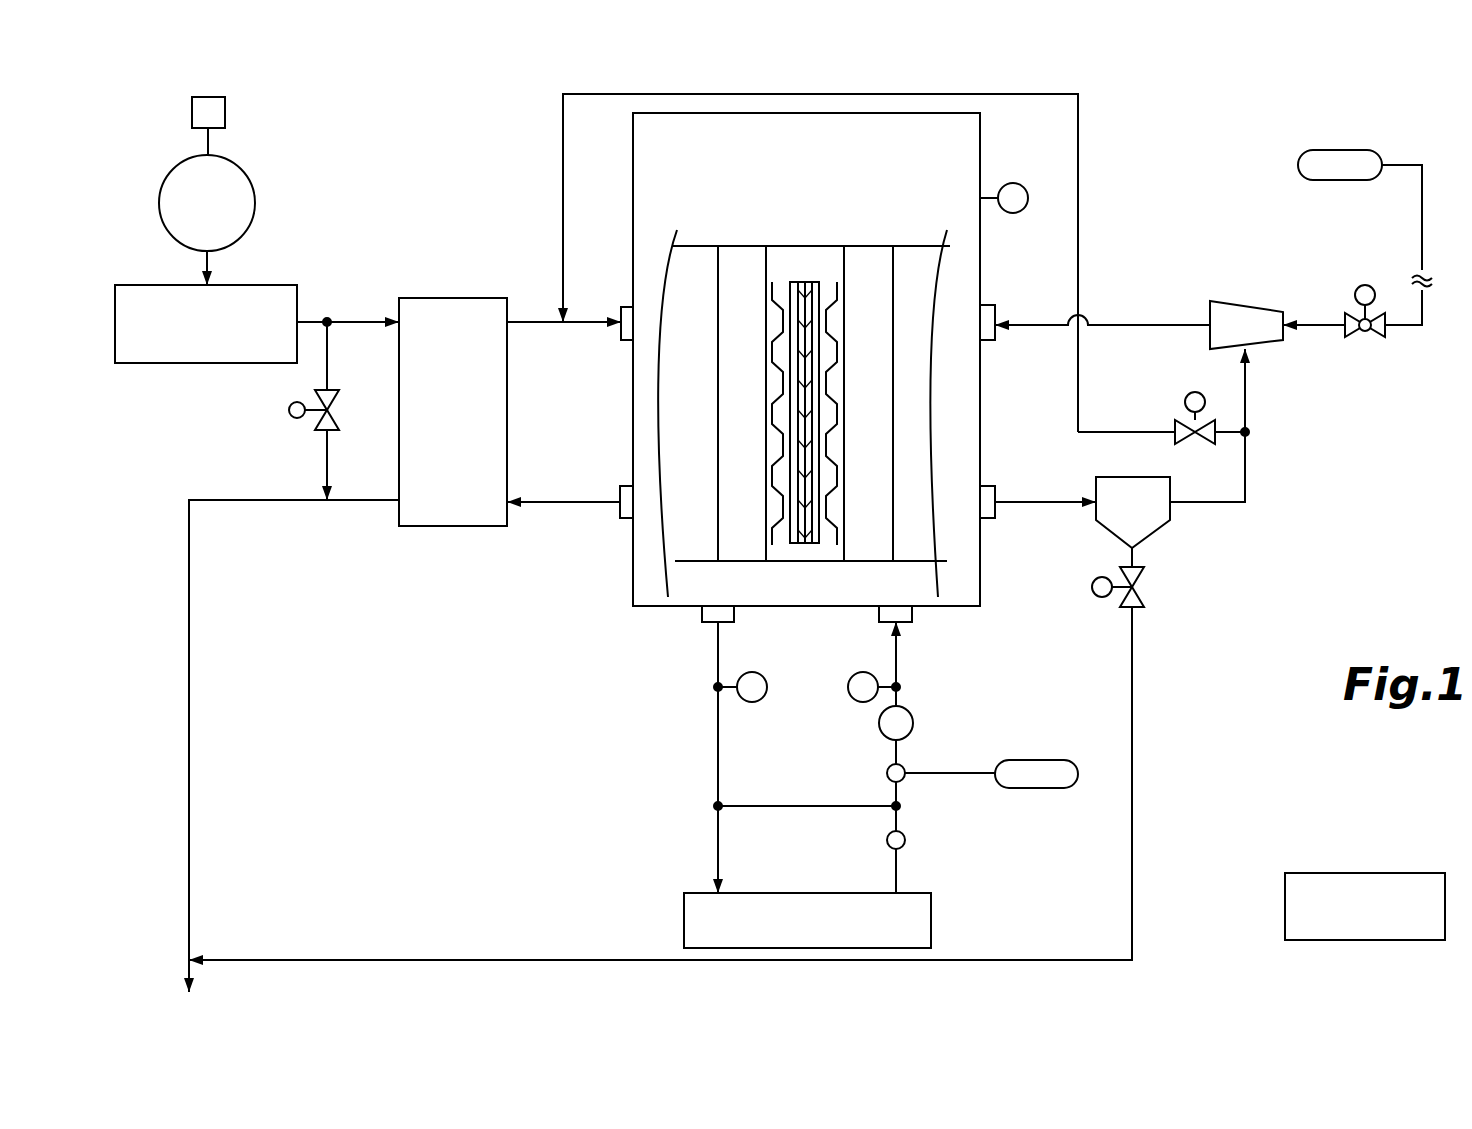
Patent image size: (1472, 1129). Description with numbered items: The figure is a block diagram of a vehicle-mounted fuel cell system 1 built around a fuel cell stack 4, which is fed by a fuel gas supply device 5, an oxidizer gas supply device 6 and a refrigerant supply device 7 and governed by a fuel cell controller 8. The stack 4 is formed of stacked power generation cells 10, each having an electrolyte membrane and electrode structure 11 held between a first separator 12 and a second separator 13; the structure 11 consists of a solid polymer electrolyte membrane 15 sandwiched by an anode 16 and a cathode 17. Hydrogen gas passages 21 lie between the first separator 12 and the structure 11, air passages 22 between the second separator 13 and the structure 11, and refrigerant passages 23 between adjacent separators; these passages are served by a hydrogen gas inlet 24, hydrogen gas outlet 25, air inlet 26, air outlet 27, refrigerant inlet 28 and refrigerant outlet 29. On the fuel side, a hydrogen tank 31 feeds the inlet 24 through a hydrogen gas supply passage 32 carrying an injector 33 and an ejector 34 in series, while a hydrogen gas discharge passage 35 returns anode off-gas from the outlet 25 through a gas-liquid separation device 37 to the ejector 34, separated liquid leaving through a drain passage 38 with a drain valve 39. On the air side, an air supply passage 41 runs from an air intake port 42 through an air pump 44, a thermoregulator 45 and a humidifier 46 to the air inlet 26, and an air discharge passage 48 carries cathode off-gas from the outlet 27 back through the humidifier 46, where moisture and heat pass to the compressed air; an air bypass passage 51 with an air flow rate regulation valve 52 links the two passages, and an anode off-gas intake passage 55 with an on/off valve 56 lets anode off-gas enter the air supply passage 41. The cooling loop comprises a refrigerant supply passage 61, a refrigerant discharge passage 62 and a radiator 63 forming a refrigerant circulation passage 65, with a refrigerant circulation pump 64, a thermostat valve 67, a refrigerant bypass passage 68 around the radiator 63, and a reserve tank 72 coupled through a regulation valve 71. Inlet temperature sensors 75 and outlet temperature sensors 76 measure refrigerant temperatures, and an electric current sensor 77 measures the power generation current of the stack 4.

The fuel cell system 1 is at (158, 97).
The fuel cell stack 4 is at (985, 140).
The fuel gas supply device 5 is at (1310, 460).
The oxidizer gas supply device 6 is at (437, 215).
The refrigerant supply device 7 is at (660, 741).
The fuel cell controller 8 is at (1413, 873).
The power generation cell 10 is at (845, 246).
The electrolyte membrane and electrode structure 11 is at (807, 349).
The first separator 12 is at (838, 407).
The second separator 13 is at (772, 407).
The solid polymer electrolyte membrane 15 is at (803, 283).
The anode 16 is at (841, 375).
The cathode 17 is at (783, 283).
The hydrogen gas passage 21 is at (826, 472).
The air passage 22 is at (783, 472).
The refrigerant passage 23 is at (830, 320).
The hydrogen gas inlet 24 is at (988, 305).
The hydrogen gas outlet 25 is at (993, 518).
The air inlet 26 is at (621, 307).
The air outlet 27 is at (620, 518).
The refrigerant inlet 28 is at (912, 620).
The refrigerant outlet 29 is at (702, 622).
The hydrogen tank 31 is at (1340, 150).
The hydrogen gas supply passage 32 is at (1422, 235).
The injector 33 is at (1365, 337).
The ejector 34 is at (1255, 301).
The hydrogen gas discharge passage 35 is at (1215, 502).
The gas-liquid separation device 37 is at (1152, 535).
The drain passage 38 is at (1132, 817).
The drain valve 39 is at (1092, 587).
The air supply passage 41 is at (362, 321).
The air intake port 42 is at (225, 112).
The air pump 44 is at (243, 170).
The thermoregulator 45 is at (270, 285).
The humidifier 46 is at (460, 298).
The air discharge passage 48 is at (350, 500).
The air bypass passage 51 is at (327, 460).
The air flow rate regulation valve 52 is at (289, 406).
The anode off-gas intake passage 55 is at (563, 150).
The on/off valve 56 is at (1195, 392).
The refrigerant supply passage 61 is at (896, 863).
The refrigerant discharge passage 62 is at (718, 840).
The radiator 63 is at (931, 925).
The refrigerant circulation pump 64 is at (913, 723).
The refrigerant circulation passage 65 is at (688, 862).
The thermostat valve 67 is at (905, 838).
The refrigerant bypass passage 68 is at (787, 806).
The regulation valve 71 is at (887, 772).
The reserve tank 72 is at (1040, 788).
The inlet temperature sensor 75 is at (851, 700).
The outlet temperature sensor 76 is at (765, 676).
The electric current sensor 77 is at (1018, 183).